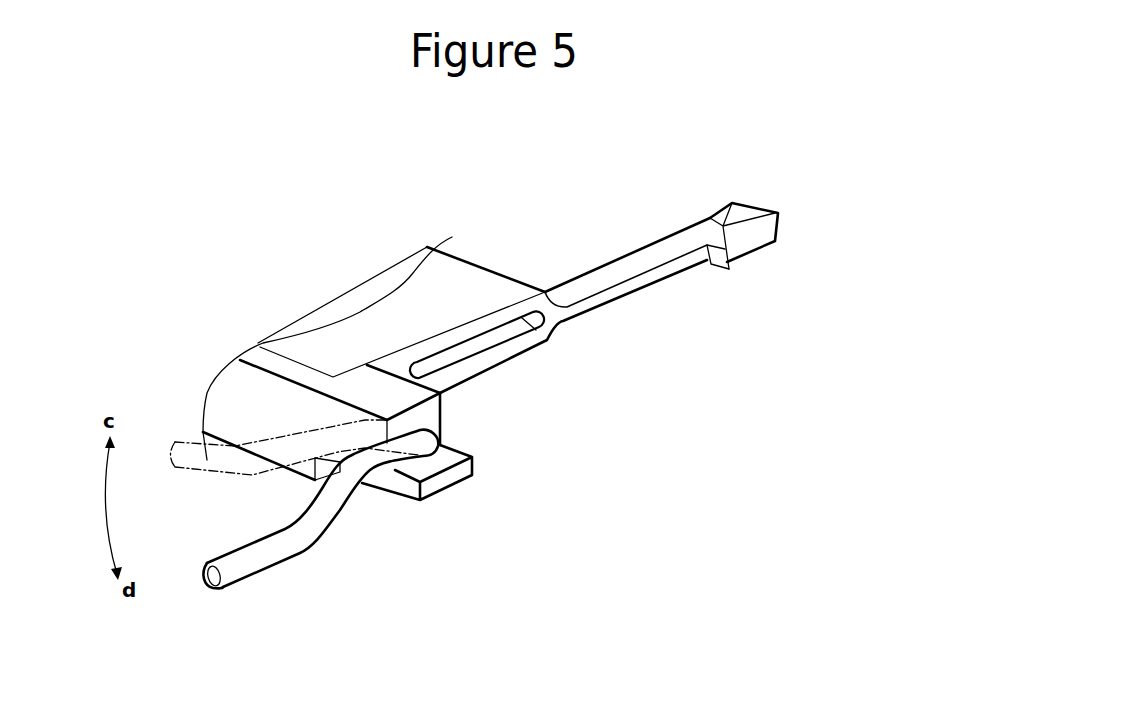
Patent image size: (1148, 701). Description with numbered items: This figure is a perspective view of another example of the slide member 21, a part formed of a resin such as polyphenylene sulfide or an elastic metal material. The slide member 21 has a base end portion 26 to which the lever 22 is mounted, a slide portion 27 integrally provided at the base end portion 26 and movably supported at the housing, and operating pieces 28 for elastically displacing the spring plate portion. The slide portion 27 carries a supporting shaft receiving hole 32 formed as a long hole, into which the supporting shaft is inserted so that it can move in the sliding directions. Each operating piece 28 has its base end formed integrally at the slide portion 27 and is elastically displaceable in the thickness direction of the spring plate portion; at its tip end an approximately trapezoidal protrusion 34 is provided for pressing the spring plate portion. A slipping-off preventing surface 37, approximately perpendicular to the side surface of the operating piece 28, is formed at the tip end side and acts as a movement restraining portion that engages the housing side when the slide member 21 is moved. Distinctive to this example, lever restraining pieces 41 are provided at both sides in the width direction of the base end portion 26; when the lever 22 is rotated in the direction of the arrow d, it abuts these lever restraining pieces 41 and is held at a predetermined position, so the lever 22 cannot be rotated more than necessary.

The slide member 21 is at (531, 309).
The lever 22 is at (315, 527).
The base end portion 26 is at (368, 393).
The slide portion 27 is at (467, 283).
The operating pieces 28 is at (620, 270).
The supporting shaft receiving hole 32 is at (477, 348).
The protrusion 34 is at (730, 200).
The slipping-off preventing surface 37 is at (710, 257).
The lever restraining pieces 41 is at (440, 462).